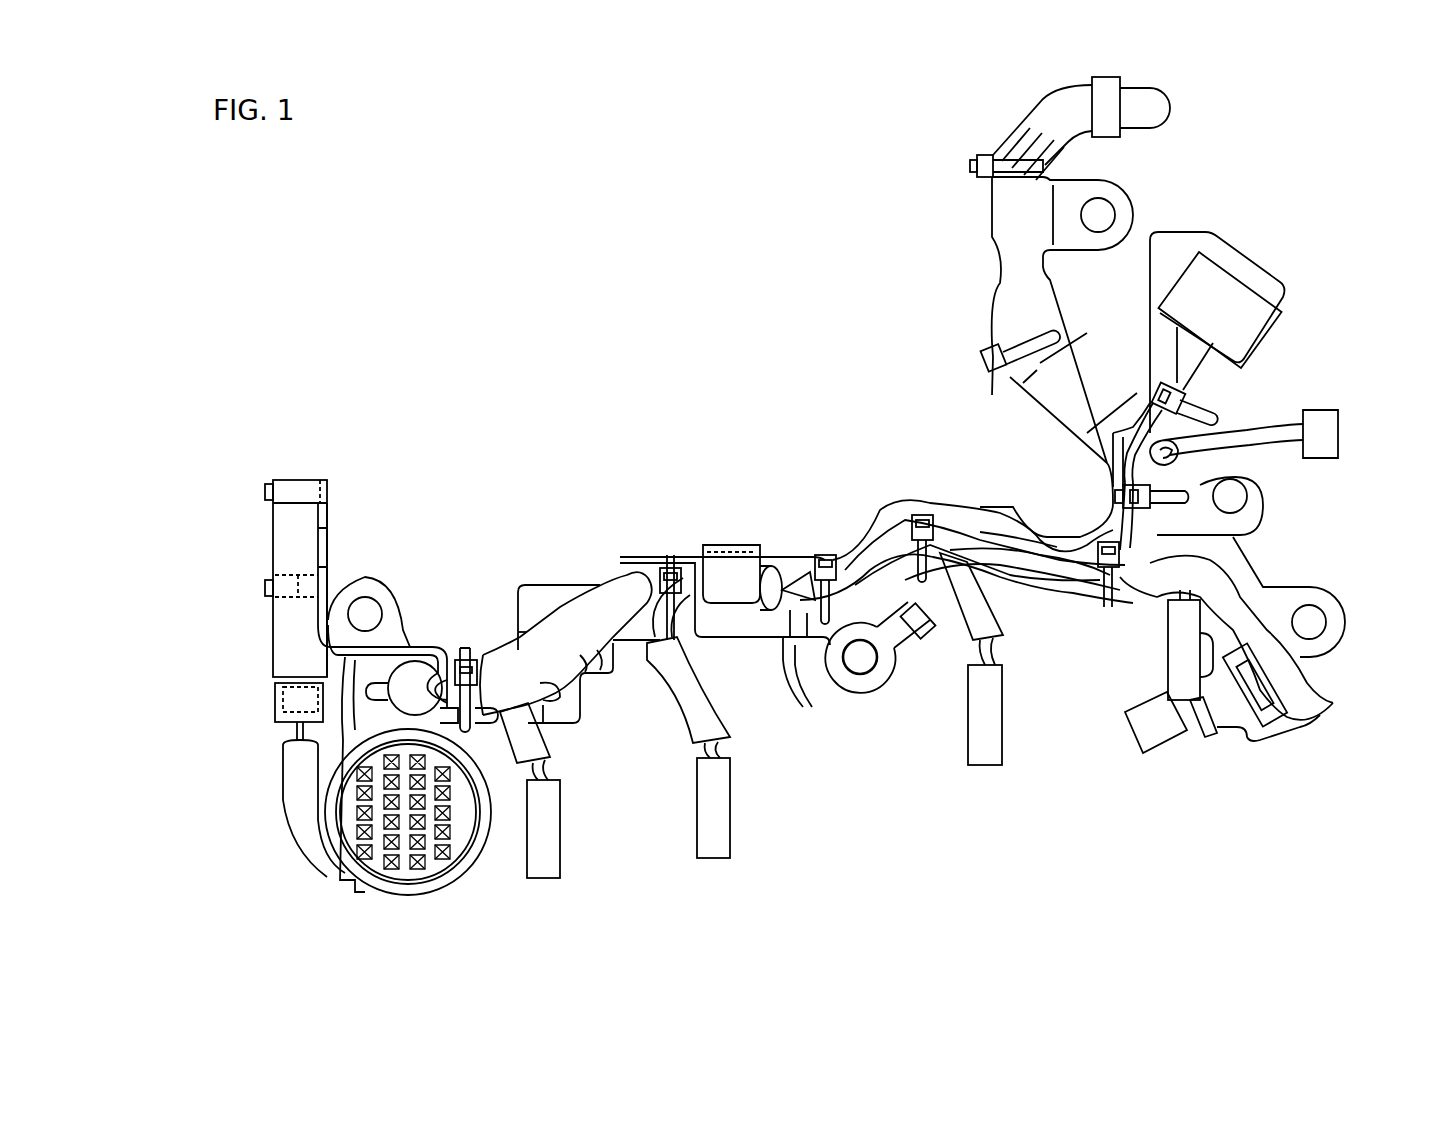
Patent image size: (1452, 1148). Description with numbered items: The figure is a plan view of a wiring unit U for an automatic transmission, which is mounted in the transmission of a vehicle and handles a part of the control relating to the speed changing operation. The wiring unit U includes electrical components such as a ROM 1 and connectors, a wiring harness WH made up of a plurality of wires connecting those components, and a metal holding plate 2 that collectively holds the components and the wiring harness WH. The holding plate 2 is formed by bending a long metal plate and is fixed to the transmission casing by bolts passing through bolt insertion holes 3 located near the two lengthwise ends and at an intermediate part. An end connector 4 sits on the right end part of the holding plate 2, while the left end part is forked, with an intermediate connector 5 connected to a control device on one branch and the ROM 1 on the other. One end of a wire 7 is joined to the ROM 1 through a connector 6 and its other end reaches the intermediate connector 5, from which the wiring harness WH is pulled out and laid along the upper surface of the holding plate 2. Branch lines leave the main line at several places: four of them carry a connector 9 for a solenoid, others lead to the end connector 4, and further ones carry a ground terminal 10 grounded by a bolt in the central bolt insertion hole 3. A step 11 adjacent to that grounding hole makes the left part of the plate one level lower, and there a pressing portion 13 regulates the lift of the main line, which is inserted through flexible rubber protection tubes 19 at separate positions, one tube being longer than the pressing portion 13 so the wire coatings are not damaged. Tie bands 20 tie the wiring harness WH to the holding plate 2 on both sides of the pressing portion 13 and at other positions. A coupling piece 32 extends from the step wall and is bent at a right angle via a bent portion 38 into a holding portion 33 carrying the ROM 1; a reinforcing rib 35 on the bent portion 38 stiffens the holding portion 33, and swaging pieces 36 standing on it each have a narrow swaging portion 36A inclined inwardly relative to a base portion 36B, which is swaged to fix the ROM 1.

The ROM 1 is at (272, 535).
The holding plate 2 is at (562, 578).
The bolt insertion hole 3 is at (363, 600).
The end connector 4 is at (1245, 300).
The intermediate connector 5 is at (380, 882).
The connector 6 is at (287, 700).
The wire 7 is at (294, 815).
The connector 9 is at (557, 850).
The ground terminal 10 is at (875, 672).
The step 11 is at (787, 640).
The pressing portion 13 is at (733, 560).
The protection tube 19 is at (752, 607).
The tie band 20 is at (463, 727).
The coupling piece 32 is at (400, 652).
The holding portion 33 is at (327, 515).
The reinforcing rib 35 is at (315, 649).
The swaging piece 36 is at (300, 484).
The swaging portion 36A is at (265, 588).
The base portion 36B is at (296, 578).
The bent portion 38 is at (330, 643).
The wiring harness WH is at (885, 550).
The wiring unit U is at (1216, 142).